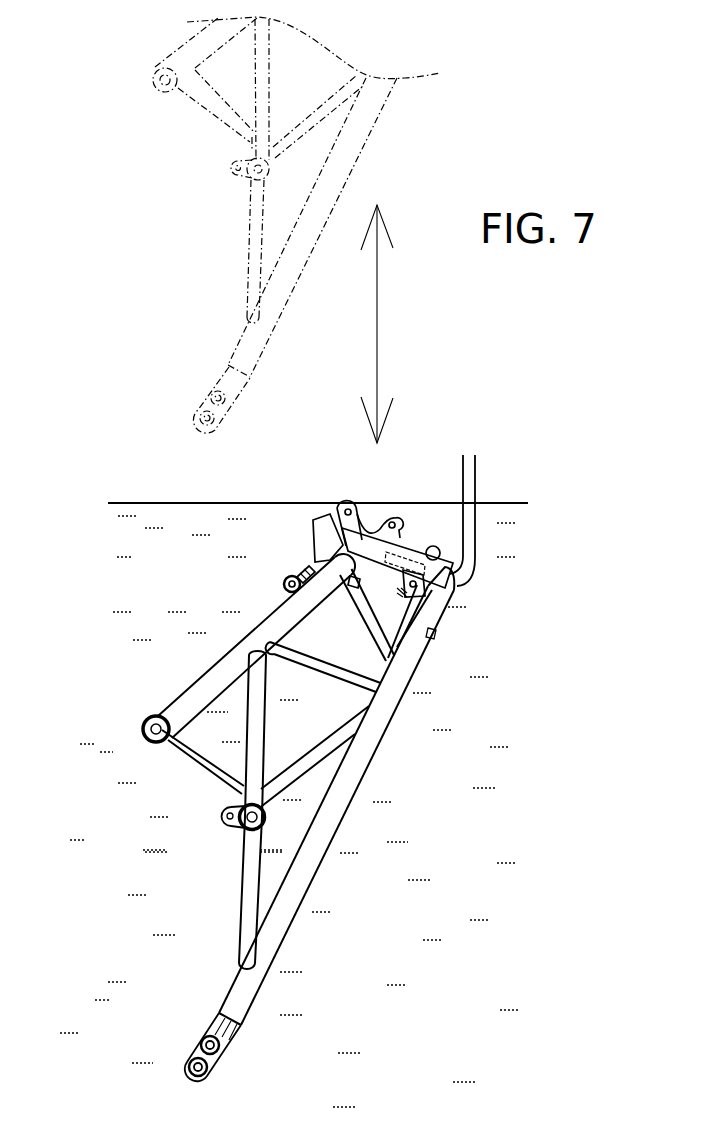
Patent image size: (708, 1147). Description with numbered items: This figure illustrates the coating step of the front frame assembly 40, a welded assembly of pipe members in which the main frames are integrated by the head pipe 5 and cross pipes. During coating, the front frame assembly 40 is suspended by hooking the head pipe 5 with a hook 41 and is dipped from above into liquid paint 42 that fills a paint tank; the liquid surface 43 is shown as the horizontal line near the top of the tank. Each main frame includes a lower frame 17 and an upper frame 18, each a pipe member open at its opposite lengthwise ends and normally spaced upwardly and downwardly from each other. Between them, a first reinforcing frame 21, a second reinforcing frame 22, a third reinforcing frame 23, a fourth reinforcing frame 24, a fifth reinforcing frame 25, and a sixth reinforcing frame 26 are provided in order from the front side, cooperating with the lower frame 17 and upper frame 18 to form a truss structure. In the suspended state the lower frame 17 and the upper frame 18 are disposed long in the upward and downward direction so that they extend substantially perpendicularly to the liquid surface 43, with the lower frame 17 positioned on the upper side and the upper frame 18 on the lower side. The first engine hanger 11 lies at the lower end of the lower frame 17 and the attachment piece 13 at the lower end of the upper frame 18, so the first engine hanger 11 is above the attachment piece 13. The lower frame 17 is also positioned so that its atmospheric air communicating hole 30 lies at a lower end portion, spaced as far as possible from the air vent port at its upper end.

The head pipe 5 is at (364, 530).
The first engine hanger 11 is at (139, 722).
The attachment piece 13 is at (215, 1059).
The lower frame 17 is at (298, 606).
The upper frame 18 is at (305, 884).
The first reinforcing frame 21 is at (380, 641).
The second reinforcing frame 22 is at (310, 653).
The third reinforcing frame 23 is at (258, 745).
The fourth reinforcing frame 24 is at (215, 774).
The fifth reinforcing frame 25 is at (343, 729).
The sixth reinforcing frame 26 is at (240, 865).
The atmospheric air communicating hole 30 is at (166, 713).
The front frame assembly 40 is at (193, 212).
The hook 41 is at (461, 492).
The liquid paint 42 is at (191, 593).
The liquid surface 43 is at (121, 502).